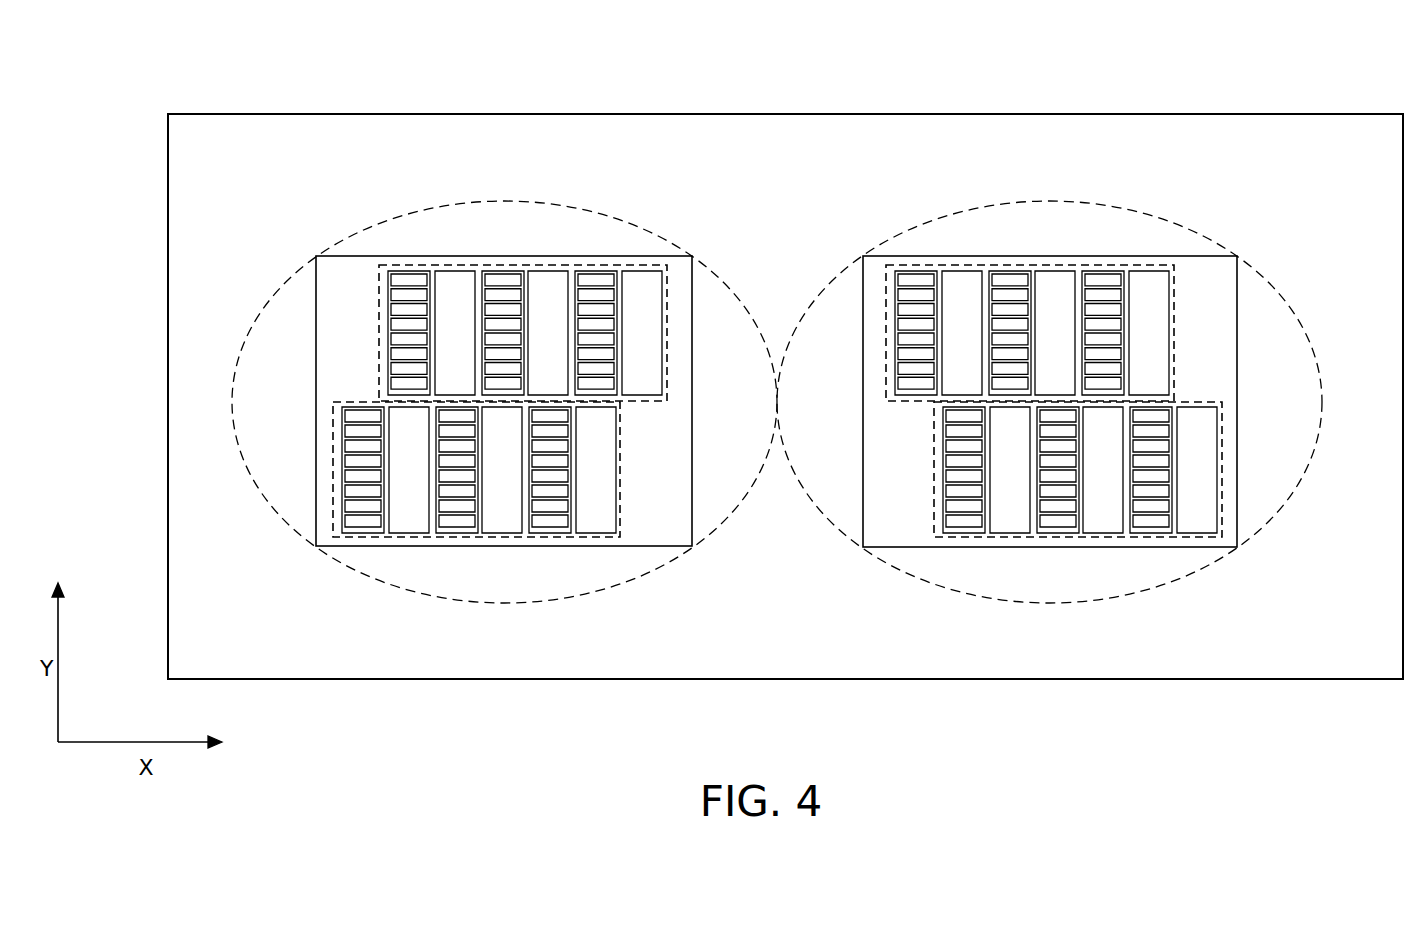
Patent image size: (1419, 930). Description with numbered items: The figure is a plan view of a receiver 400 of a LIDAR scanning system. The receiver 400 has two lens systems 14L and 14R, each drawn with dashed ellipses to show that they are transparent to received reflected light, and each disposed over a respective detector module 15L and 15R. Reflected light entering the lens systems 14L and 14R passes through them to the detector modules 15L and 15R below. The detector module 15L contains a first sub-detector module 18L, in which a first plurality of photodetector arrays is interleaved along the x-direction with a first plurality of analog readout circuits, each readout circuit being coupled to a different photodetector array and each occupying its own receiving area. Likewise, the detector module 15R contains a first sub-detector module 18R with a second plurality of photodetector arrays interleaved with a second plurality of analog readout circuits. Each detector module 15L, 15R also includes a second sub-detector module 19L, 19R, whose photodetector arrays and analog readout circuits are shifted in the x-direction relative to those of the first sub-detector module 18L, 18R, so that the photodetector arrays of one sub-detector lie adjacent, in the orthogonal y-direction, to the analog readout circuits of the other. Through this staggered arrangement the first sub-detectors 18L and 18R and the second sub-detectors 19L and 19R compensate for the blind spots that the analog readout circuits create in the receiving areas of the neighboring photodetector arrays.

The receiver 400 is at (789, 113).
The lens system 14L is at (572, 208).
The lens system 14R is at (947, 215).
The detector module 15L is at (316, 400).
The detector module 15R is at (1237, 402).
The first sub-detector module 18L is at (511, 265).
The first sub-detector module 18R is at (1042, 265).
The second sub-detector module 19L is at (498, 537).
The second sub-detector module 19R is at (1053, 537).